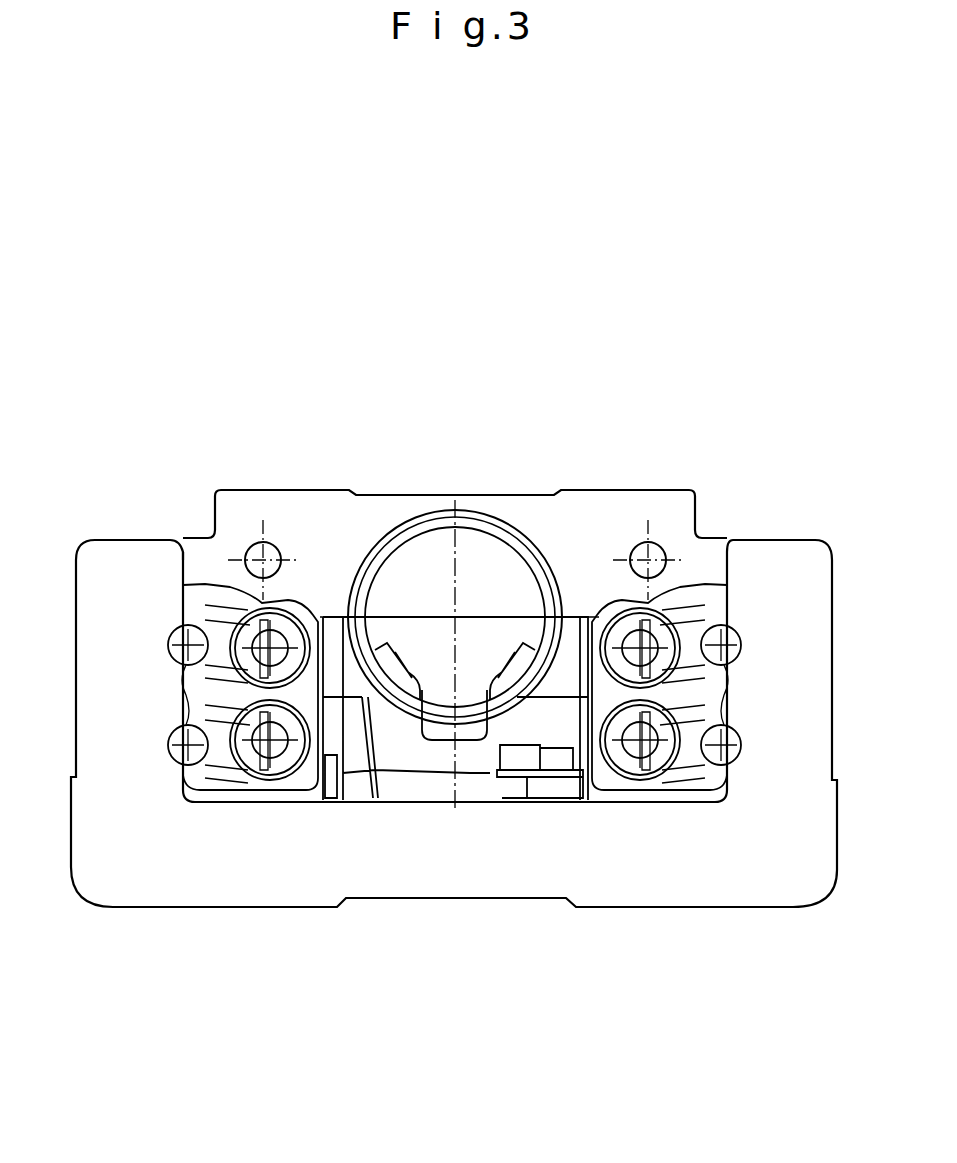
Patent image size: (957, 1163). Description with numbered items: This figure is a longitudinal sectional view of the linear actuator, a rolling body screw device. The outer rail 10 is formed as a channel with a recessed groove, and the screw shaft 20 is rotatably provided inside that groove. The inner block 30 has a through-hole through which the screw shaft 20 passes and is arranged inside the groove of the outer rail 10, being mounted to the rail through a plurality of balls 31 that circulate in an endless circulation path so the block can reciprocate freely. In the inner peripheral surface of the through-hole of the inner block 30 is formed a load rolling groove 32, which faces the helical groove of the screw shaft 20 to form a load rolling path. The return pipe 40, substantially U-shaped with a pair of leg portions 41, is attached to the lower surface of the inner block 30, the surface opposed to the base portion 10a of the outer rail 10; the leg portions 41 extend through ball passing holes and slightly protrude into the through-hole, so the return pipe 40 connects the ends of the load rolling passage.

The outer rail 10 is at (835, 700).
The base portion 10a is at (283, 873).
The screw shaft 20 is at (493, 570).
The inner block 30 is at (695, 518).
The balls 31 is at (180, 646).
The load rolling groove 32 is at (412, 547).
The return pipe 40 is at (472, 748).
The leg portions 41 is at (398, 648).